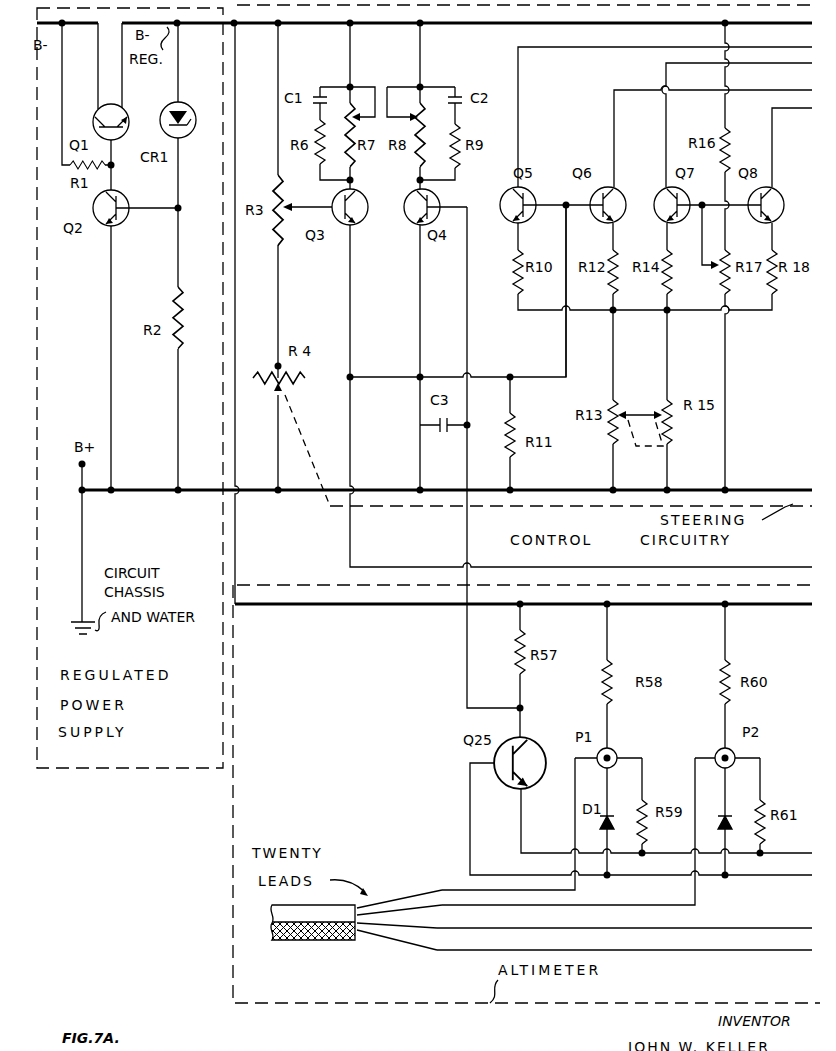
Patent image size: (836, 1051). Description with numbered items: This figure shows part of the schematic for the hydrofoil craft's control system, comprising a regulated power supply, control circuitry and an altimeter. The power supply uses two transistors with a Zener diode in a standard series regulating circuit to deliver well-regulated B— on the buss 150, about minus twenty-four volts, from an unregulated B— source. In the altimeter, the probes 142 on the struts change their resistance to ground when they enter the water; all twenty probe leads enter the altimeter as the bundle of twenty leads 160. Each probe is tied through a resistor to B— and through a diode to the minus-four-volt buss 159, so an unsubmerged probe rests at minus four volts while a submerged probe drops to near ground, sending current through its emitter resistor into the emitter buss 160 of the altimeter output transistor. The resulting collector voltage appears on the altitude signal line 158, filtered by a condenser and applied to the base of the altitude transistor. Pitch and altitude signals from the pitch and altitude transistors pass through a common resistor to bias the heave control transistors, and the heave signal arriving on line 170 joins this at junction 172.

The regulated B— buss 150 is at (82, 26).
The altitude signal line 158 is at (467, 688).
The bundle of twenty leads 160 is at (521, 832).
The heave signal line 170 is at (390, 566).
The junction 172 is at (353, 376).
The probe 142 is at (618, 752).
The −4 volt buss 159 is at (757, 882).